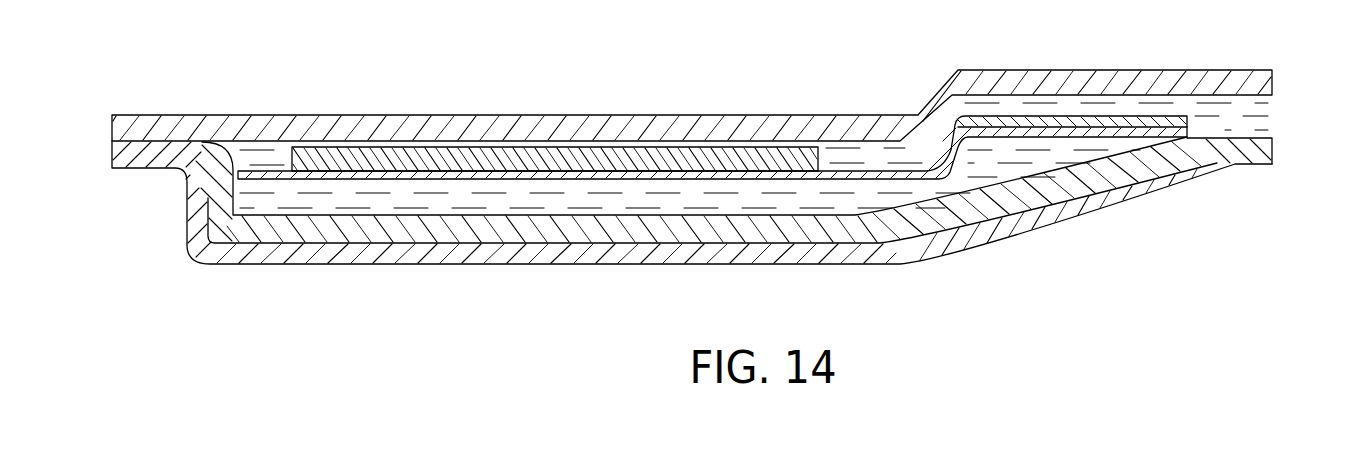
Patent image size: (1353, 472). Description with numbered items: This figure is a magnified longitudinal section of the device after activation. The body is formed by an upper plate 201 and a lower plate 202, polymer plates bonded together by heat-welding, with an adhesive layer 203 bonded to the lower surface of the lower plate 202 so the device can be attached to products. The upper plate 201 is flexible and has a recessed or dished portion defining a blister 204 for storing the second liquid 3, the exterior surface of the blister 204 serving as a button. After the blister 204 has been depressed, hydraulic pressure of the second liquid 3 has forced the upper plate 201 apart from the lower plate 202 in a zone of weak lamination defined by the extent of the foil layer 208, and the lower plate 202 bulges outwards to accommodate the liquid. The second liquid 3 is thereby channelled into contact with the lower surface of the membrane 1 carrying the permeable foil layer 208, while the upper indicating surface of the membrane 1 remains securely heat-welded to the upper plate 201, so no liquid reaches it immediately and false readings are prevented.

The membrane 1 is at (362, 153).
The second liquid 3 is at (640, 207).
The upper plate 201 is at (729, 71).
The lower plate 202 is at (1252, 151).
The adhesive layer 203 is at (400, 256).
The blister 204 is at (1128, 80).
The foil layer 208 is at (878, 160).